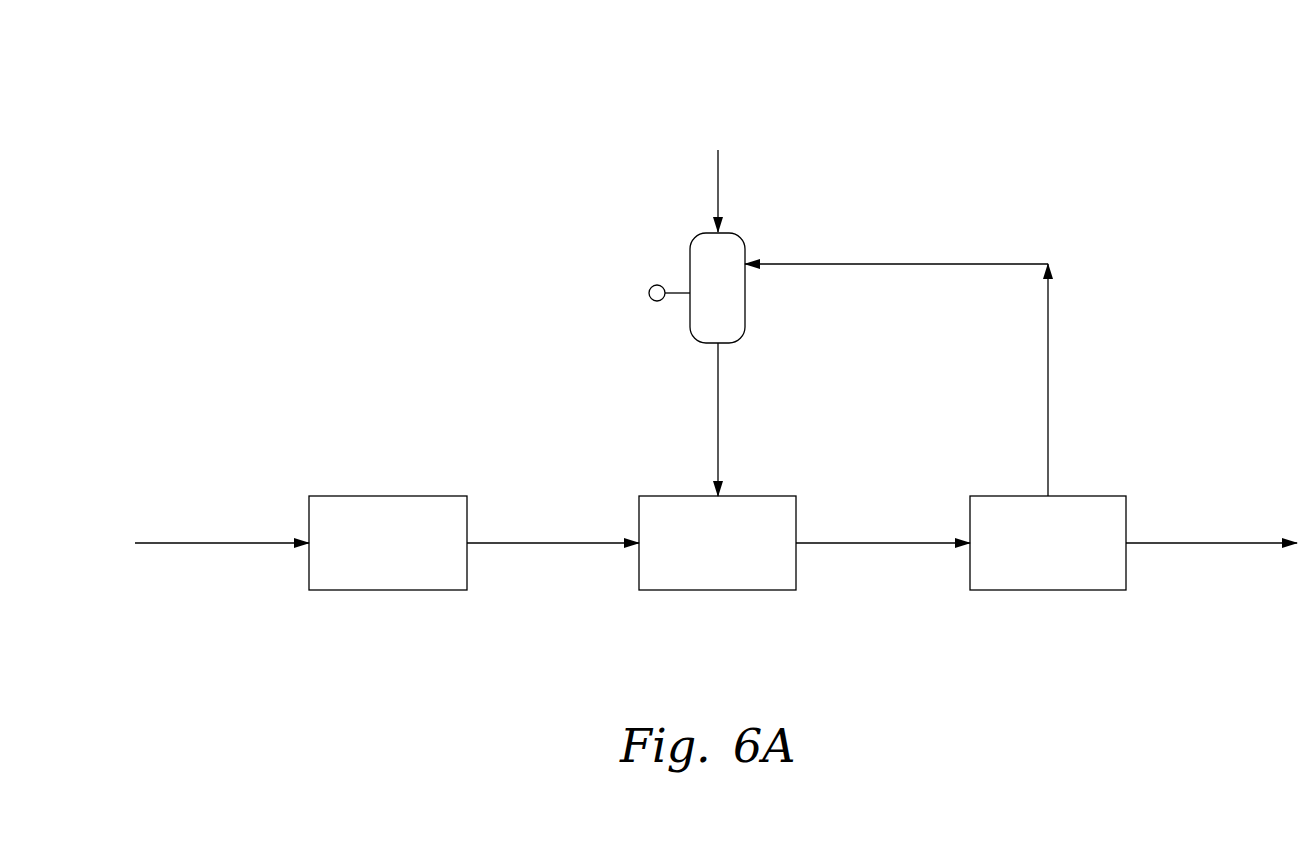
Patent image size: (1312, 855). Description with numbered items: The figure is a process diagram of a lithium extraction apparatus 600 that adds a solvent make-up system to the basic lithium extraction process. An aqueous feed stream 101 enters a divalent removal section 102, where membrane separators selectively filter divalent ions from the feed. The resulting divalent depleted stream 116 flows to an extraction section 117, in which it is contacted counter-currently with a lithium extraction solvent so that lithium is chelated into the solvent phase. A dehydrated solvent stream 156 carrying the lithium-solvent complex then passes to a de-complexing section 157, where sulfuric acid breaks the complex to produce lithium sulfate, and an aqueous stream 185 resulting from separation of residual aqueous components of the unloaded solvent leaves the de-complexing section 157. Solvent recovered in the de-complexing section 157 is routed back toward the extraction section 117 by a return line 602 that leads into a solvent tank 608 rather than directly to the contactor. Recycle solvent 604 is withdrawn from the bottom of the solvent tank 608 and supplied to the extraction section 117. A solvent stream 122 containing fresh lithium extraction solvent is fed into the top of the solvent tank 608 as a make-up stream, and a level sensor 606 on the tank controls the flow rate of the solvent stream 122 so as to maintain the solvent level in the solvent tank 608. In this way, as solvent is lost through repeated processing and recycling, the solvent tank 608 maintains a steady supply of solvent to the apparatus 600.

The apparatus 600 is at (1210, 272).
The aqueous feed stream 101 is at (218, 540).
The divalent removal section 102 is at (408, 556).
The divalent depleted stream 116 is at (552, 540).
The extraction section 117 is at (738, 556).
The dehydrated solvent stream 156 is at (888, 540).
The de-complexing section 157 is at (1068, 556).
The aqueous stream 185 is at (1213, 540).
The solvent stream 122 is at (718, 173).
The solvent tank 608 is at (746, 305).
The level sensor 606 is at (650, 287).
The recycle solvent 604 is at (718, 402).
The recycle stream 602 is at (1048, 402).